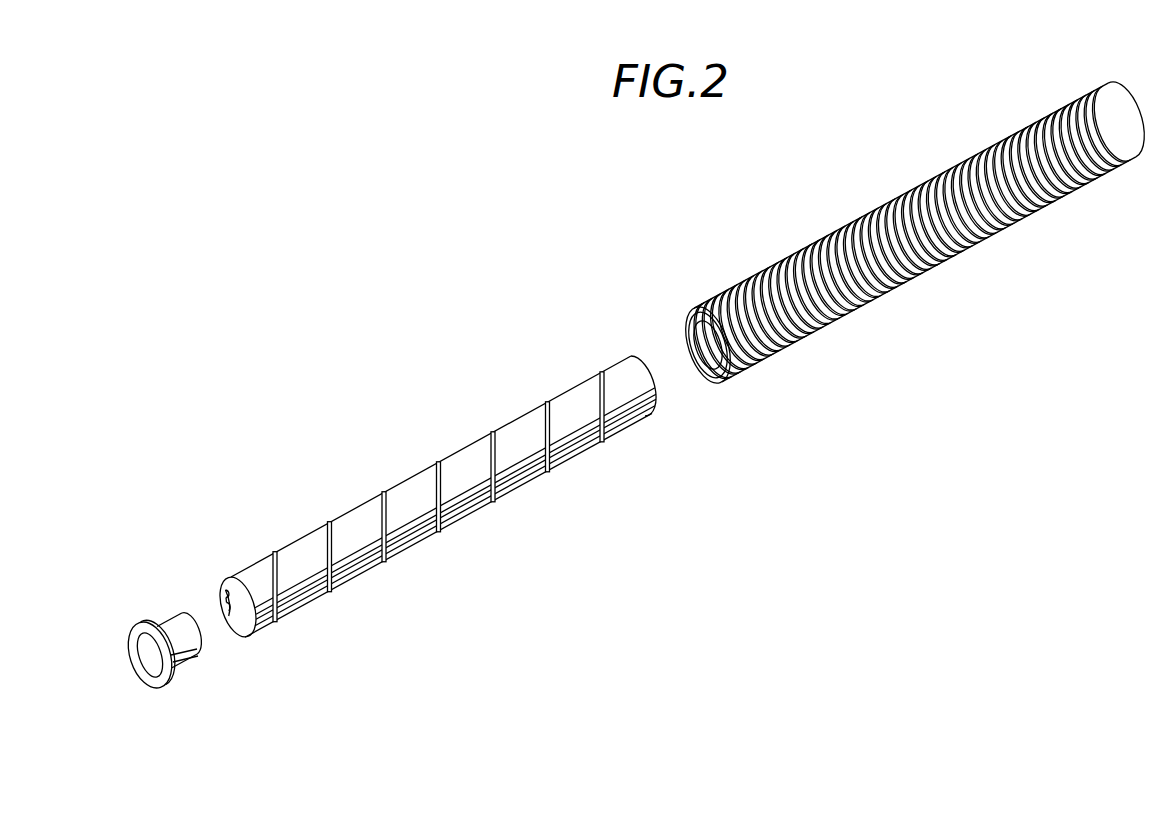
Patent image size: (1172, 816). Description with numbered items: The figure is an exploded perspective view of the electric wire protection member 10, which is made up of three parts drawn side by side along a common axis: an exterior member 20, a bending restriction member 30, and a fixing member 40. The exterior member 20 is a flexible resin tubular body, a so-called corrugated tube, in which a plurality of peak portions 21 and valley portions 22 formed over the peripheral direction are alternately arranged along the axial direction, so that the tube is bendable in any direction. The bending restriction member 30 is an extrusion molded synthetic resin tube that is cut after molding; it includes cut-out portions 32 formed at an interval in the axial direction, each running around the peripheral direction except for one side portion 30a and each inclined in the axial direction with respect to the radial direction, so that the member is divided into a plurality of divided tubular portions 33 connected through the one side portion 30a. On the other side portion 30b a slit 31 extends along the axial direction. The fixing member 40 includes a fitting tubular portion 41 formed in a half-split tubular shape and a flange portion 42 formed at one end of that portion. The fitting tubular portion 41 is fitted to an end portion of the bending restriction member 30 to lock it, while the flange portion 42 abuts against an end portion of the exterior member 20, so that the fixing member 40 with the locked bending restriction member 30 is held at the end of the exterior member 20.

The electric wire protection member 10 is at (432, 345).
The exterior member 20 is at (846, 219).
The peak portions 21 is at (708, 298).
The valley portions 22 is at (716, 298).
The bending restriction member 30 is at (514, 410).
The one side portion 30a is at (221, 596).
The other side portion 30b is at (267, 637).
The slit 31 is at (368, 566).
The cut-out portions 32 is at (326, 545).
The divided tubular portions 33 is at (300, 556).
The fixing member 40 is at (134, 619).
The fitting tubular portion 41 is at (173, 624).
The flange portion 42 is at (152, 688).